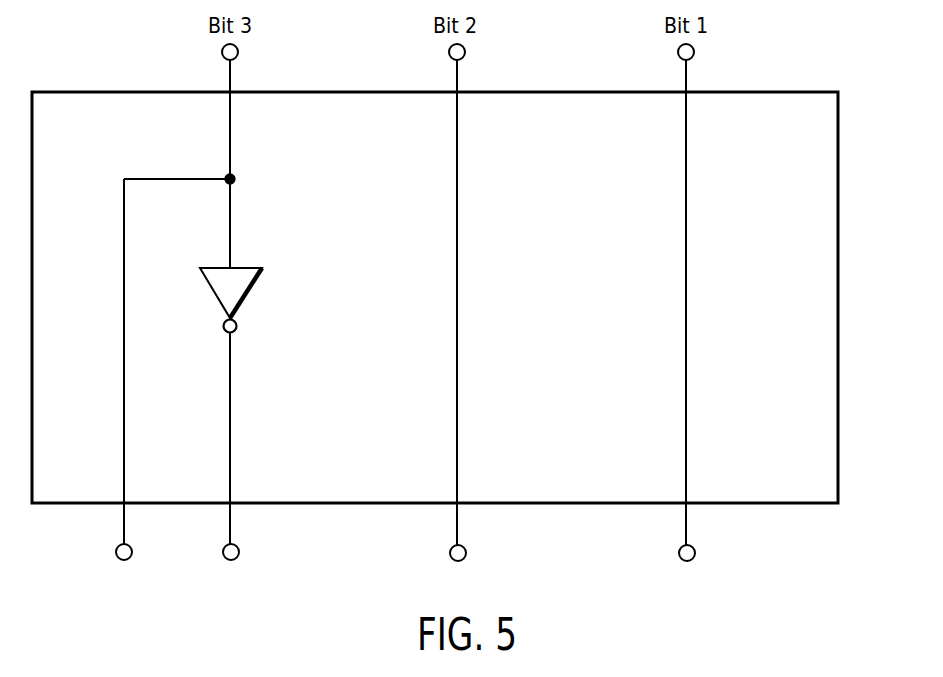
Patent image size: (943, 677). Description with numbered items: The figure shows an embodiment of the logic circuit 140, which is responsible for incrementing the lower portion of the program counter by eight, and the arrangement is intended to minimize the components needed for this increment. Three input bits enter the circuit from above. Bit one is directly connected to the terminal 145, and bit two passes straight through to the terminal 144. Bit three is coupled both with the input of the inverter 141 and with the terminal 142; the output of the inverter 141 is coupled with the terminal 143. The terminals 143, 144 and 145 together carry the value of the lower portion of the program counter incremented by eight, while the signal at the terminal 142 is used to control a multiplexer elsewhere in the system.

The logic circuit 140 is at (838, 217).
The inverter 141 is at (244, 299).
The terminal 142 is at (116, 552).
The terminal 143 is at (236, 558).
The terminal 144 is at (466, 553).
The terminal 145 is at (692, 559).